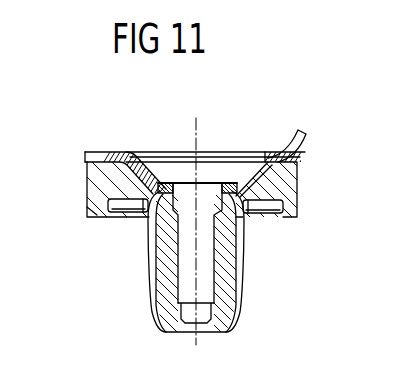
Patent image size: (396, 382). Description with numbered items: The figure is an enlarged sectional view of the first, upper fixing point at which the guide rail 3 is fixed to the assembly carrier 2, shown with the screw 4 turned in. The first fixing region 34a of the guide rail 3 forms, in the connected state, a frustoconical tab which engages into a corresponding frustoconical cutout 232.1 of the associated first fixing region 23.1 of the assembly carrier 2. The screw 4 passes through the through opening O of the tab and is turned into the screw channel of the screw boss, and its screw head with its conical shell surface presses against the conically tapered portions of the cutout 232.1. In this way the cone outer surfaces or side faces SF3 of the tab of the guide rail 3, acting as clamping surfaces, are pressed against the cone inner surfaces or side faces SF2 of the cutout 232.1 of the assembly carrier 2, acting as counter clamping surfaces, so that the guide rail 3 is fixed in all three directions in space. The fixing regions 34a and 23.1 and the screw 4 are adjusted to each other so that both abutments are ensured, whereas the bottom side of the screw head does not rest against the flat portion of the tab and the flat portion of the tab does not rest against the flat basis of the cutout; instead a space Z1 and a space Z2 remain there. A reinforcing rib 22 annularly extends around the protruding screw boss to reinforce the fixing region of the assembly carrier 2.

The guide rail 3 is at (110, 150).
The first fixing region 34a is at (133, 156).
The screw 4 is at (207, 146).
The space Z1 is at (231, 181).
The side face of the tab SF3 is at (268, 160).
The through opening O is at (290, 180).
The space Z2 is at (248, 214).
The assembly carrier 2 is at (115, 227).
The frustoconical cutout 232.1 is at (105, 211).
The reinforcing rib 22 is at (107, 205).
The side face of the cutout SF2 is at (147, 189).
The first fixing region 23.1 is at (245, 288).